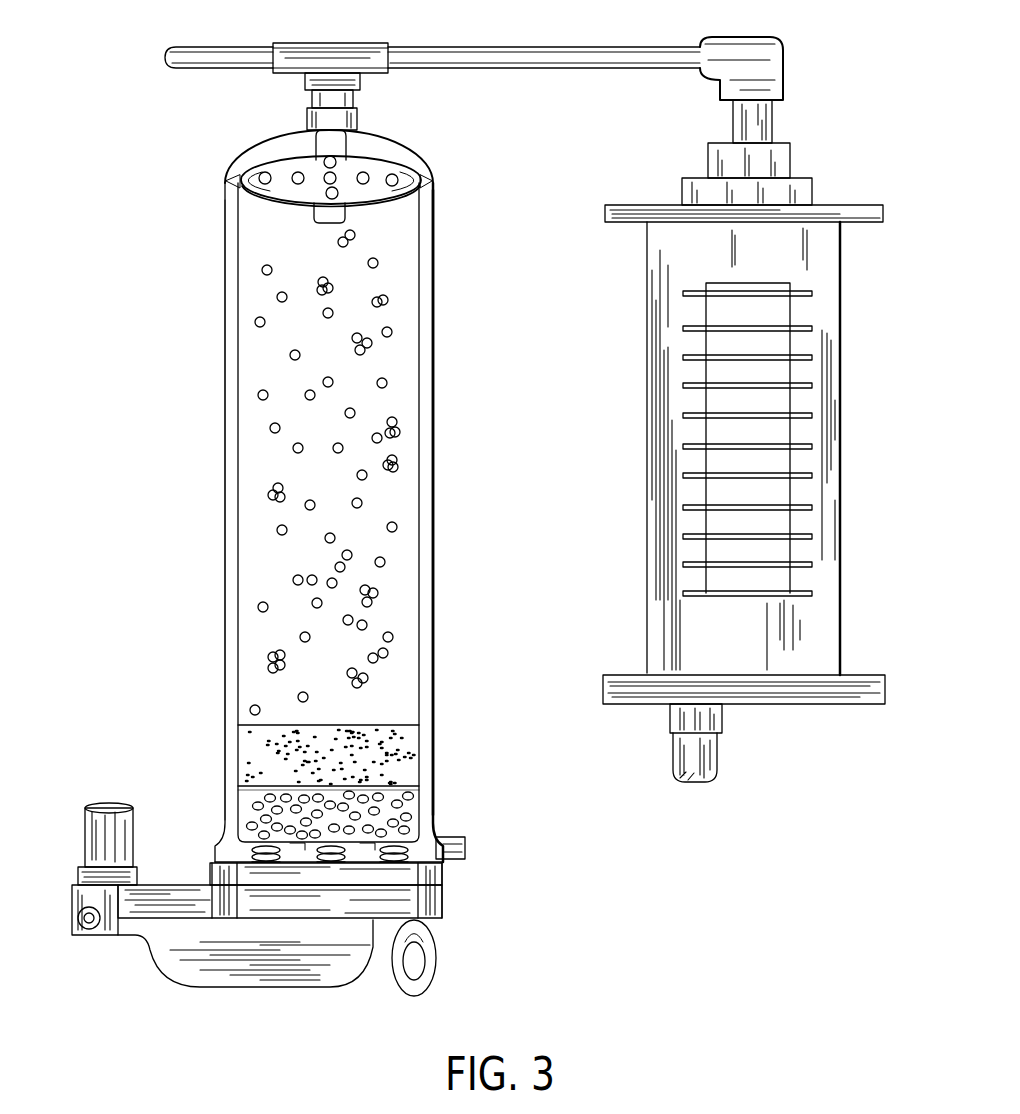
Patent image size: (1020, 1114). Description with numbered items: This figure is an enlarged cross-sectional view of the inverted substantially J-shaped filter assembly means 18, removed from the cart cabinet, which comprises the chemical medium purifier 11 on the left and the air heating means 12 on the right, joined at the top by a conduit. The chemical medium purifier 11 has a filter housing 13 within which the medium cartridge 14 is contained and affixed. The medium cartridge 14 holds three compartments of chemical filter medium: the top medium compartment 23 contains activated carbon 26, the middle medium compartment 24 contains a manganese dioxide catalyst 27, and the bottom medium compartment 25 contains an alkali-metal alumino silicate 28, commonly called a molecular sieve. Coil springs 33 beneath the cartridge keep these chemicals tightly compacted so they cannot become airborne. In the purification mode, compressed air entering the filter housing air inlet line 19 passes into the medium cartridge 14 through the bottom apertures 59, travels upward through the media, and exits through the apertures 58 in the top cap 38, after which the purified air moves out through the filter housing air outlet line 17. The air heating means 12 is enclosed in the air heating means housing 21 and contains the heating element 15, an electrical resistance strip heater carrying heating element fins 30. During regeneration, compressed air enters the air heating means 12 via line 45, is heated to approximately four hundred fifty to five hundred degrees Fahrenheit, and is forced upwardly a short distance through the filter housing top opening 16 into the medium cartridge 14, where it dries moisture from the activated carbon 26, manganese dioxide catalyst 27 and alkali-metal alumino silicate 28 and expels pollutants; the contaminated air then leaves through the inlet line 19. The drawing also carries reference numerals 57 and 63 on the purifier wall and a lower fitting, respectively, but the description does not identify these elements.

The chemical medium purifier 11 is at (223, 323).
The air heating means 12 is at (658, 352).
The filter housing 13 is at (435, 357).
The medium cartridge 14 is at (420, 302).
The heating element 15 is at (775, 405).
The filter housing top opening 16 is at (312, 141).
The filter housing air outlet line 17 is at (205, 46).
The inverted substantially J-shaped filter assembly means 18 is at (645, 45).
The filter housing air inlet line 19 is at (83, 842).
The air heating means housing 21 is at (842, 290).
The top medium compartment 23 is at (256, 452).
The middle medium compartment 24 is at (250, 755).
The bottom medium compartment 25 is at (250, 806).
The activated carbon 26 is at (400, 461).
The manganese dioxide catalyst 27 is at (412, 770).
The alkali-metal alumino silicate 28 is at (408, 818).
The heating element fins 30 is at (812, 564).
The coil springs 33 is at (280, 929).
The top cap 38 is at (436, 210).
The line 45 is at (700, 752).
The liner 57 is at (228, 256).
The apertures 58 is at (396, 179).
The bottom apertures 59 is at (302, 887).
The drain fitting 63 is at (466, 845).